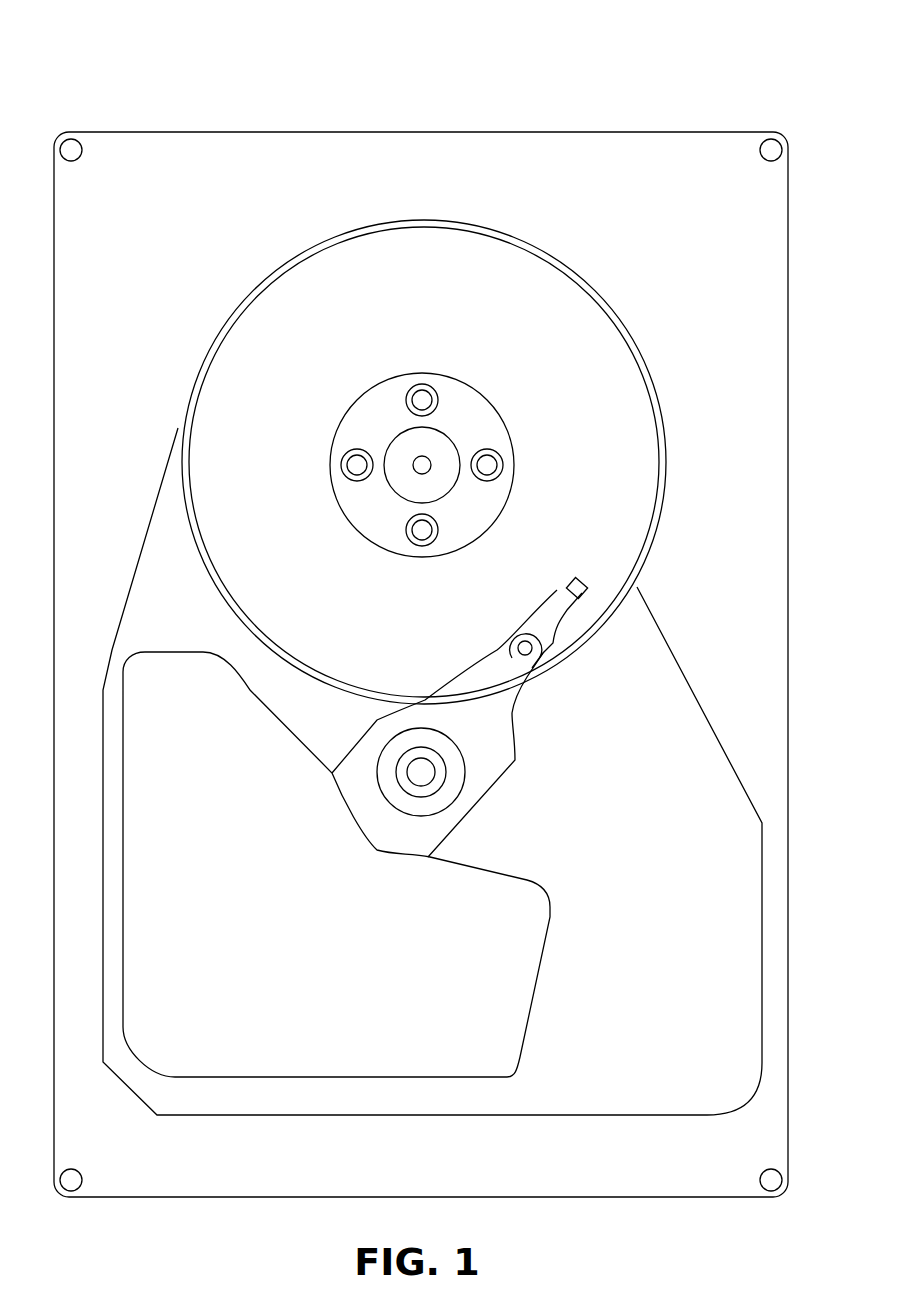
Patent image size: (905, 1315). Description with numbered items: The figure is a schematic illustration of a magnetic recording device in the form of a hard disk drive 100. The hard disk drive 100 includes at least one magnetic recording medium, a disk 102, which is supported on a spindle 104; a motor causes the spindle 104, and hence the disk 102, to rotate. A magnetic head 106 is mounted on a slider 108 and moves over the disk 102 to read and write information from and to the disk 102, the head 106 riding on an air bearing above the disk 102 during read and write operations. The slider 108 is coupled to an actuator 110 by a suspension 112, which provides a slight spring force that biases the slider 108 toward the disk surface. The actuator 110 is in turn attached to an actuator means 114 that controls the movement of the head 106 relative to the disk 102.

The hard disk drive 100 is at (697, 65).
The disk 102 is at (310, 290).
The spindle 104 is at (405, 443).
The magnetic head 106 is at (582, 578).
The slider 108 is at (542, 627).
The actuator 110 is at (423, 773).
The suspension 112 is at (490, 713).
The actuator means 114 is at (513, 985).